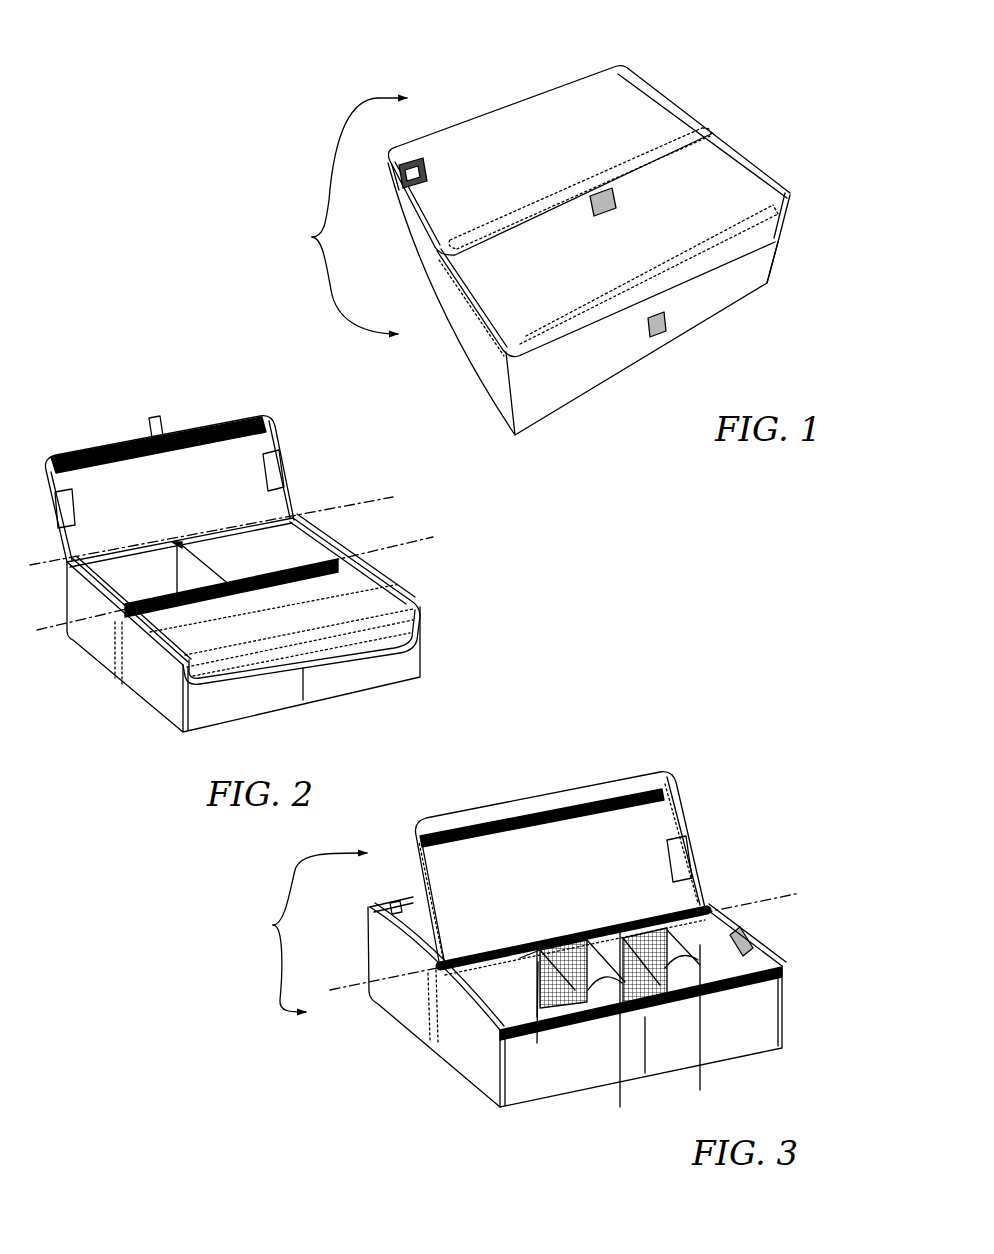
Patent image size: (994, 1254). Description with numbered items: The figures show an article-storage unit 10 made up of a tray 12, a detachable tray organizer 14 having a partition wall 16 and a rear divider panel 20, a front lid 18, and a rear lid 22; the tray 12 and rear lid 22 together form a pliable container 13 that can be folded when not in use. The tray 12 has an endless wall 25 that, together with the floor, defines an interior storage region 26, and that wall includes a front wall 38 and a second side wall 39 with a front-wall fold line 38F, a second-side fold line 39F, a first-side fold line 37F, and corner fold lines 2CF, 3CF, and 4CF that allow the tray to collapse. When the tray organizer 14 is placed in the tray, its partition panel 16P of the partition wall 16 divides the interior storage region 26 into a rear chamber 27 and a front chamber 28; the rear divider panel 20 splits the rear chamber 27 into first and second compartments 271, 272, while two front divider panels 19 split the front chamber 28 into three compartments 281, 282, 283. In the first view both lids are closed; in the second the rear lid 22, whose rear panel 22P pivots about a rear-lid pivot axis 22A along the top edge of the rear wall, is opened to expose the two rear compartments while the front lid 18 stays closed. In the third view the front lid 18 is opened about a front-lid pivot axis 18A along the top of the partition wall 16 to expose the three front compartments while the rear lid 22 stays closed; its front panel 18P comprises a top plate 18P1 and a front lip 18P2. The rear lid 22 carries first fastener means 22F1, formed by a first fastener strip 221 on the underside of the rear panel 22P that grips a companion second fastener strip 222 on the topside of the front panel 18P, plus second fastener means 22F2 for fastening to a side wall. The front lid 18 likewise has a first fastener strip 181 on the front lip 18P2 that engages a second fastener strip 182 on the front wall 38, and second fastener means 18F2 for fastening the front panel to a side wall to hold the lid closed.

In FIG. 1, the article-storage unit 10 is at (662, 78).
In FIG. 2, the article-storage unit 10 is at (394, 543).
In FIG. 3, the article-storage unit 10 is at (676, 728).
In FIG. 1, the tray 12 is at (467, 310).
In FIG. 2, the tray 12 is at (107, 629).
In FIG. 3, the tray 12 is at (406, 998).
In FIG. 1, the container 13 is at (347, 216).
In FIG. 3, the container 13 is at (306, 932).
In FIG. 1, the detachable tray organizer 14 is at (727, 168).
In FIG. 2, the detachable tray organizer 14 is at (221, 560).
In FIG. 3, the detachable tray organizer 14 is at (702, 866).
In FIG. 3, the partition wall 16 is at (490, 976).
In FIG. 3, the partition panel 16P is at (710, 868).
In FIG. 1, the front lid 18 is at (821, 149).
In FIG. 2, the front lid 18 is at (378, 610).
In FIG. 3, the front lid 18 is at (441, 815).
In FIG. 2, the front-lid pivot axis 18A is at (402, 548).
In FIG. 3, the front-lid pivot axis 18A is at (348, 985).
In FIG. 1, the front panel 18P is at (595, 256).
In FIG. 2, the front panel 18P is at (288, 622).
In FIG. 3, the front panel 18P is at (513, 838).
In FIG. 1, the top plate 18P1 is at (700, 208).
In FIG. 3, the top plate 18P1 is at (660, 825).
In FIG. 1, the front lip 18P2 is at (724, 241).
In FIG. 3, the front lip 18P2 is at (599, 785).
In FIG. 3, the second fastener means 18F2 is at (750, 931).
In FIG. 3, the first fastener strip 181 is at (471, 830).
In FIG. 3, the second fastener strip 182 is at (537, 1043).
In FIG. 3, the front divider panel 19 is at (660, 1035).
In FIG. 2, the rear divider panel 20 is at (195, 577).
In FIG. 1, the rear lid 22 is at (442, 166).
In FIG. 2, the rear lid 22 is at (91, 440).
In FIG. 3, the rear lid 22 is at (405, 912).
In FIG. 2, the rear-lid pivot axis 22A is at (356, 494).
In FIG. 1, the rear panel 22P is at (553, 108).
In FIG. 2, the rear panel 22P is at (147, 477).
In FIG. 2, the first fastener means 22F1 is at (262, 370).
In FIG. 2, the second fastener means 22F2 is at (333, 532).
In FIG. 2, the first fastener strip 221 is at (207, 428).
In FIG. 2, the second fastener strip 222 is at (241, 583).
In FIG. 1, the endless wall 25 is at (749, 289).
In FIG. 2, the endless wall 25 is at (398, 662).
In FIG. 3, the endless wall 25 is at (758, 1027).
In FIG. 2, the interior storage region 26 is at (93, 571).
In FIG. 3, the interior storage region 26 is at (708, 952).
In FIG. 2, the rear chamber 27 is at (301, 553).
In FIG. 2, the first compartment 271 is at (279, 553).
In FIG. 2, the second compartment 272 is at (110, 580).
In FIG. 3, the front chamber 28 is at (476, 986).
In FIG. 3, the first compartment 281 is at (660, 939).
In FIG. 3, the second compartment 282 is at (590, 969).
In FIG. 3, the third compartment 283 is at (509, 972).
In FIG. 1, the second-corner fold line 2CF is at (780, 253).
In FIG. 1, the third-corner fold line 3CF is at (513, 396).
In FIG. 1, the fourth-corner fold line 4CF is at (398, 223).
In FIG. 1, the first-side fold line 37F is at (758, 186).
In FIG. 1, the front wall 38 is at (611, 357).
In FIG. 2, the front wall 38 is at (259, 690).
In FIG. 3, the front wall 38 is at (587, 1059).
In FIG. 1, the front-wall fold line 38F is at (656, 338).
In FIG. 1, the second side wall 39 is at (491, 353).
In FIG. 2, the second side wall 39 is at (163, 673).
In FIG. 3, the second side wall 39 is at (468, 1044).
In FIG. 1, the second-side fold line 39F is at (439, 275).